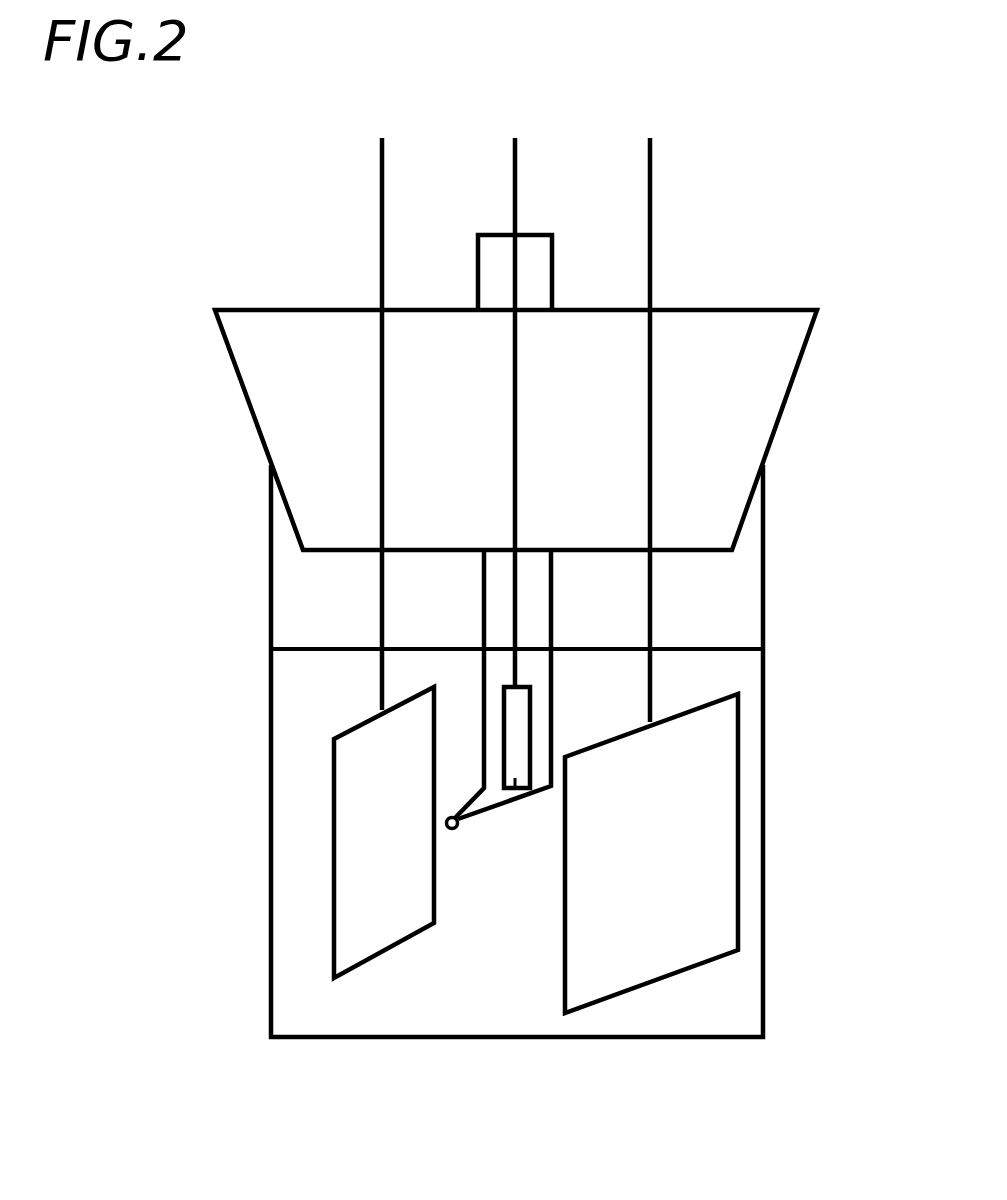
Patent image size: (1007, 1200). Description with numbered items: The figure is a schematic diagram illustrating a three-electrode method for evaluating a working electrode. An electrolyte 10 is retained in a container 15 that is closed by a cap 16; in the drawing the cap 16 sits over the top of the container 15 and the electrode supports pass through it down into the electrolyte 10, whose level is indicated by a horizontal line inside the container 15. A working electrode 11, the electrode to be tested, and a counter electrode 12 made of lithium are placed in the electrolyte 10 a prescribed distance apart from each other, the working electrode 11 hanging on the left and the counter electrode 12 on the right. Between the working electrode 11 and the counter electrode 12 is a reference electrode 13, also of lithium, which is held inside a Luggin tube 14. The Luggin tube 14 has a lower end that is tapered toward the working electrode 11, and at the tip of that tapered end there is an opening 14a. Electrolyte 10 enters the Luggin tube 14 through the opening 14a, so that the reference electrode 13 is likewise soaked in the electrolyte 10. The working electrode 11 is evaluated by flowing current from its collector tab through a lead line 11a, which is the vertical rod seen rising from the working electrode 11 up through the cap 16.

The electrolyte 10 is at (367, 1013).
The working electrode 11 is at (363, 833).
The lead line 11a is at (380, 218).
The counter electrode 12 is at (708, 833).
The reference electrode 13 is at (517, 790).
The Luggin tube 14 is at (553, 620).
The opening 14a is at (453, 829).
The container 15 is at (763, 534).
The cap 16 is at (748, 376).